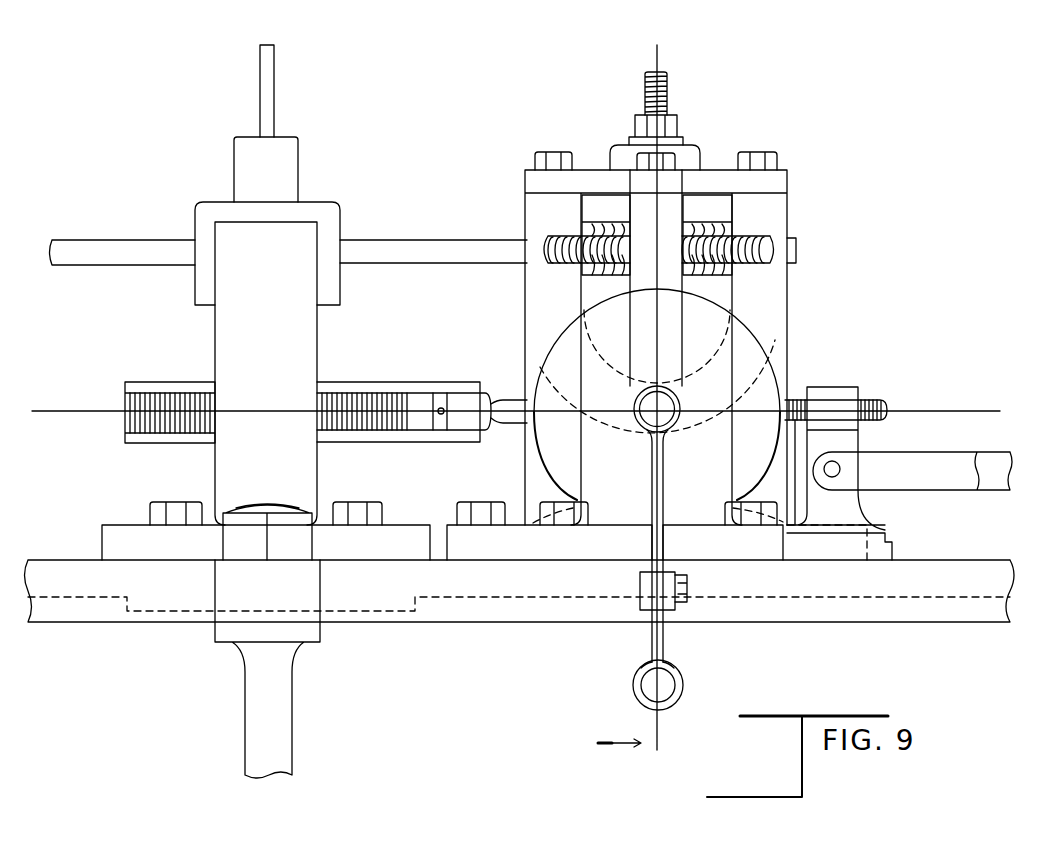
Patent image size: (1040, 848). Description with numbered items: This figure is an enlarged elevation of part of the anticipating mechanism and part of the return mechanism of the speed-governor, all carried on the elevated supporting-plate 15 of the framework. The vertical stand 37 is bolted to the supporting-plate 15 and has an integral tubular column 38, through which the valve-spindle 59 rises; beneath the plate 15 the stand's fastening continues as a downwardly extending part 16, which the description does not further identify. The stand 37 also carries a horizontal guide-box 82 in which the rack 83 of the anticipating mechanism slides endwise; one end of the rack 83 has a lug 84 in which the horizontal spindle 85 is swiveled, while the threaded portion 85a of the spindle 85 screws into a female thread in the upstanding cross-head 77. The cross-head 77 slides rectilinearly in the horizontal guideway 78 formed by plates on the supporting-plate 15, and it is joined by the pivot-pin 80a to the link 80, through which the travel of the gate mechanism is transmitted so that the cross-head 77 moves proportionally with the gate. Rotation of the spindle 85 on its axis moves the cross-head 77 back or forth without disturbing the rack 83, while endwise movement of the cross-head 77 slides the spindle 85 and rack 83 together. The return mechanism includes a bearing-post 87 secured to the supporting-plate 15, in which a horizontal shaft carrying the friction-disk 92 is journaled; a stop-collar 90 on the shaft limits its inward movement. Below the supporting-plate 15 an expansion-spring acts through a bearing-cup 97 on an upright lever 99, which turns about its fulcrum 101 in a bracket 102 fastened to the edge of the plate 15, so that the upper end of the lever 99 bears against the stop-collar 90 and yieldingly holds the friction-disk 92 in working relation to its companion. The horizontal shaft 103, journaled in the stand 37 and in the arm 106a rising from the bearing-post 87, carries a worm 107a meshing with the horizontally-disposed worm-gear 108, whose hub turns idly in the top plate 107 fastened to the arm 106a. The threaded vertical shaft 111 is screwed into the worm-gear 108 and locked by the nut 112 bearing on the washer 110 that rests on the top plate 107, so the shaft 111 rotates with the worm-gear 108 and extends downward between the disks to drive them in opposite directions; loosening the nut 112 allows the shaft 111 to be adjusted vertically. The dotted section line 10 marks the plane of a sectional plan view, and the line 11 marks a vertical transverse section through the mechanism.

The section line 10 is at (514, 412).
The section line 11 is at (632, 398).
The supporting-plate 15 is at (491, 625).
The shaft 16 is at (284, 730).
The vertical stand 37 is at (228, 342).
The tubular column 38 is at (284, 160).
The valve-spindle 59 is at (272, 94).
The cross-head 77 is at (858, 512).
The guideway 78 is at (835, 560).
The link 80 is at (948, 462).
The pivot-pin 80a is at (841, 468).
The guide-box 82 is at (372, 383).
The rack 83 is at (155, 421).
The lug 84 is at (466, 426).
The spindle 85 is at (511, 424).
The threaded portion of spindle 85a is at (868, 400).
The bearing-post 87 is at (687, 468).
The stop-collar 90 is at (683, 396).
The friction-disk 92 is at (565, 348).
The bearing-cup 97 is at (684, 691).
The lever 99 is at (666, 639).
The fulcrum 101 is at (690, 583).
The bracket 102 is at (640, 582).
The horizontal shaft 103 is at (421, 240).
The arm 106a is at (672, 327).
The top plate 107 is at (712, 178).
The worm 107a is at (606, 233).
The worm-gear 108 is at (776, 244).
The washer 110 is at (622, 153).
The threaded vertical shaft 111 is at (668, 86).
The nut 112 is at (676, 127).